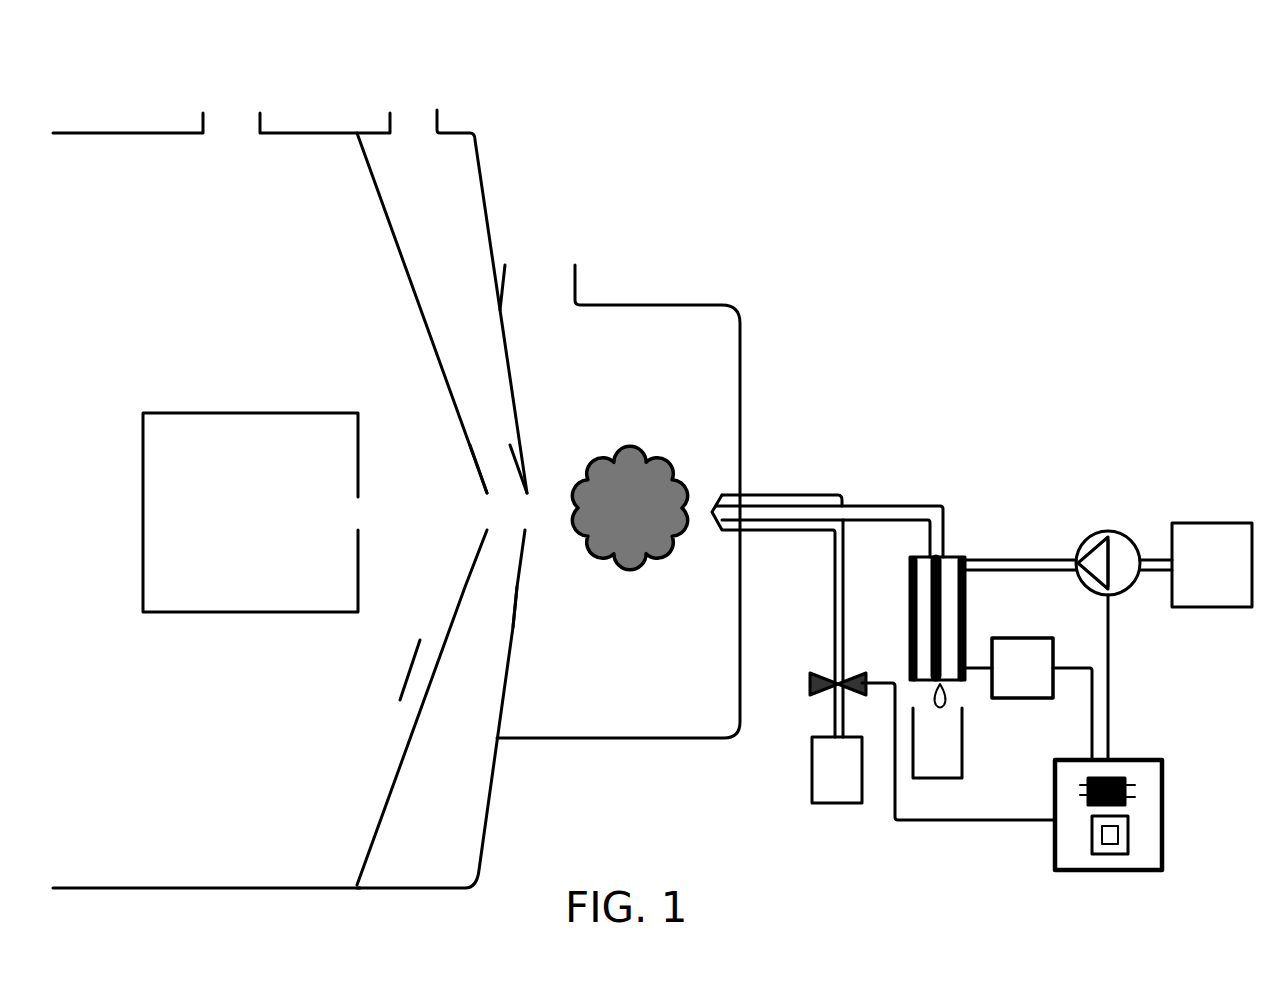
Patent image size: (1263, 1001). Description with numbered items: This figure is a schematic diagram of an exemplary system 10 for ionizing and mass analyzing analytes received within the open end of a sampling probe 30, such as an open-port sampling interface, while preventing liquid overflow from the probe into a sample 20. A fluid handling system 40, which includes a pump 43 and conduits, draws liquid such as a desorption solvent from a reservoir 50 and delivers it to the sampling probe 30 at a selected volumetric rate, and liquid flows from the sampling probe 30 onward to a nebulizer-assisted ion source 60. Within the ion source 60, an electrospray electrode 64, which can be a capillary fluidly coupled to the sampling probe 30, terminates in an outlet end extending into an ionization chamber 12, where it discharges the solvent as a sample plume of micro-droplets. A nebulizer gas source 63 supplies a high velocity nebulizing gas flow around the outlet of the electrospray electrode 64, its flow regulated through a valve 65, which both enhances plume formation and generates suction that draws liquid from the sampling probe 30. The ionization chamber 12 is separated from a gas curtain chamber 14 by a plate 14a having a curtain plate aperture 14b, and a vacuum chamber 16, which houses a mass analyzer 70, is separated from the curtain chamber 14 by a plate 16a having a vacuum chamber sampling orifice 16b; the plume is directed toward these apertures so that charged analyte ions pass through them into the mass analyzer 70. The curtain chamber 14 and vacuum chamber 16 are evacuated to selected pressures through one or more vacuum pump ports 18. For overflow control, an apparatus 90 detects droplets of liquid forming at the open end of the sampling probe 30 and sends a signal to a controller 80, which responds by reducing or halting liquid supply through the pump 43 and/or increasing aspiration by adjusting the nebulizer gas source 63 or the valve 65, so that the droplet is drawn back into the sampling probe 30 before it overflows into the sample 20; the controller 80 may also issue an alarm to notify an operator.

The system 10 is at (827, 862).
The ionization chamber 12 is at (681, 705).
The gas curtain chamber 14 is at (421, 853).
The plate 14a is at (513, 627).
The curtain plate aperture 14b is at (529, 508).
The vacuum chamber 16 is at (270, 510).
The plate 16a is at (430, 675).
The vacuum chamber sampling orifice 16b is at (476, 507).
The vacuum pump ports 18 is at (408, 99).
The sample 20 is at (953, 757).
The sampling probe 30 is at (986, 604).
The fluid handling system 40 is at (987, 544).
The pump 43 is at (1108, 532).
The reservoir 50 is at (1212, 565).
The ion source 60 is at (826, 460).
The nebulizer gas source 63 is at (837, 770).
The electrospray electrode 64 is at (761, 504).
The valve 65 is at (810, 683).
The mass analyzer 70 is at (250, 512).
The controller 80 is at (1165, 833).
The apparatus for detecting droplets 90 is at (1028, 699).